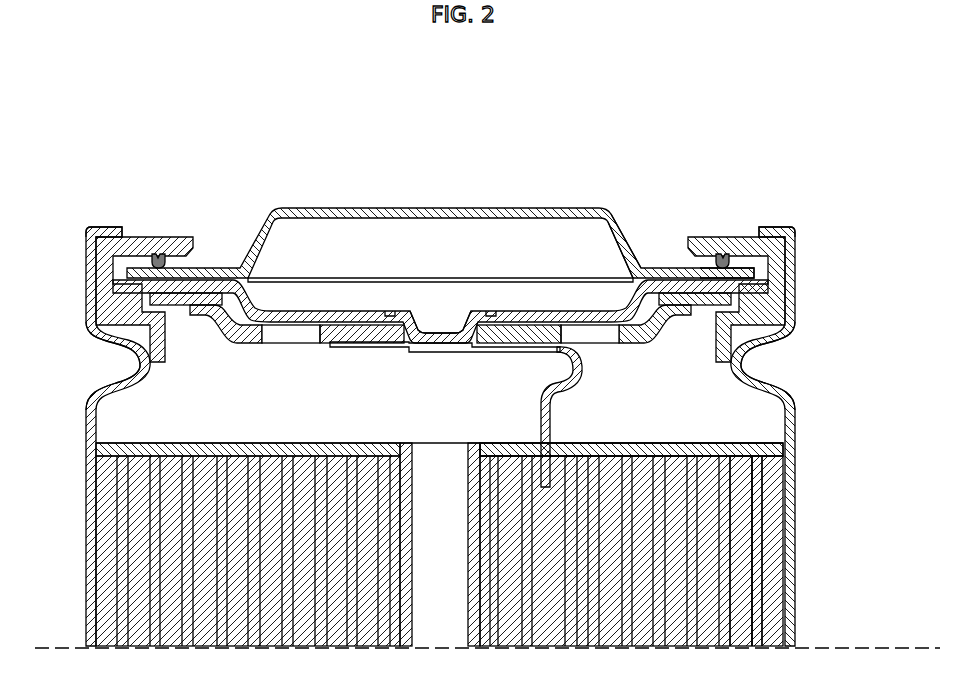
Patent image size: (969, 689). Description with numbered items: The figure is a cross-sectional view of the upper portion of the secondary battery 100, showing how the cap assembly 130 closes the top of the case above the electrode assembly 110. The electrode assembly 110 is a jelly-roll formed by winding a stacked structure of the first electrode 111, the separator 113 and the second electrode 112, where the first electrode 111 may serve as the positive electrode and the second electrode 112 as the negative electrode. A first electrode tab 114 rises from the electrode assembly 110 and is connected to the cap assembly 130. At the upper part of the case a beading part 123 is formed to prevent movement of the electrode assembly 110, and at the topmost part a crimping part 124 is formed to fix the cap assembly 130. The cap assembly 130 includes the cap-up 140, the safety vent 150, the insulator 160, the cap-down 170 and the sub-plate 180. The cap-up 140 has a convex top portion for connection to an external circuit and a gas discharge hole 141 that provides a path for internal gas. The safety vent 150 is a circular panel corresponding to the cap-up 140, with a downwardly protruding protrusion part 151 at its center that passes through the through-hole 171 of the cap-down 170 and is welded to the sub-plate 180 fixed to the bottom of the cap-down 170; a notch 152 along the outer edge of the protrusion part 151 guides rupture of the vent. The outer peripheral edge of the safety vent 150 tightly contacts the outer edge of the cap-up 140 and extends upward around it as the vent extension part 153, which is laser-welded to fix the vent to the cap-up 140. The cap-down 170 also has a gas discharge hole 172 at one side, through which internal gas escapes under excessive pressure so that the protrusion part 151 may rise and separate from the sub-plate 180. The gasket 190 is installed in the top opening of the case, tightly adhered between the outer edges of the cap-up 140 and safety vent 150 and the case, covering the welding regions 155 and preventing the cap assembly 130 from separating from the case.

The secondary battery 100 is at (64, 124).
The electrode assembly 110 is at (516, 544).
The first electrode 111 is at (744, 585).
The second electrode 112 is at (780, 507).
The separator 113 is at (758, 547).
The first electrode tab 114 is at (553, 412).
The beading part 123 is at (760, 355).
The crimping part 124 is at (790, 238).
The cap assembly 130 is at (792, 129).
The cap-up 140 is at (463, 207).
The gas discharge hole 141 is at (618, 246).
The safety vent 150 is at (583, 311).
The protrusion part 151 is at (441, 333).
The notch 152 is at (551, 311).
The vent extension part 153 is at (745, 240).
The welding regions 155 is at (719, 258).
The insulator 160 is at (675, 293).
The cap-down 170 is at (357, 325).
The through-hole 171 is at (418, 352).
The gas discharge hole 172 is at (260, 336).
The sub-plate 180 is at (299, 330).
The gasket 190 is at (772, 303).